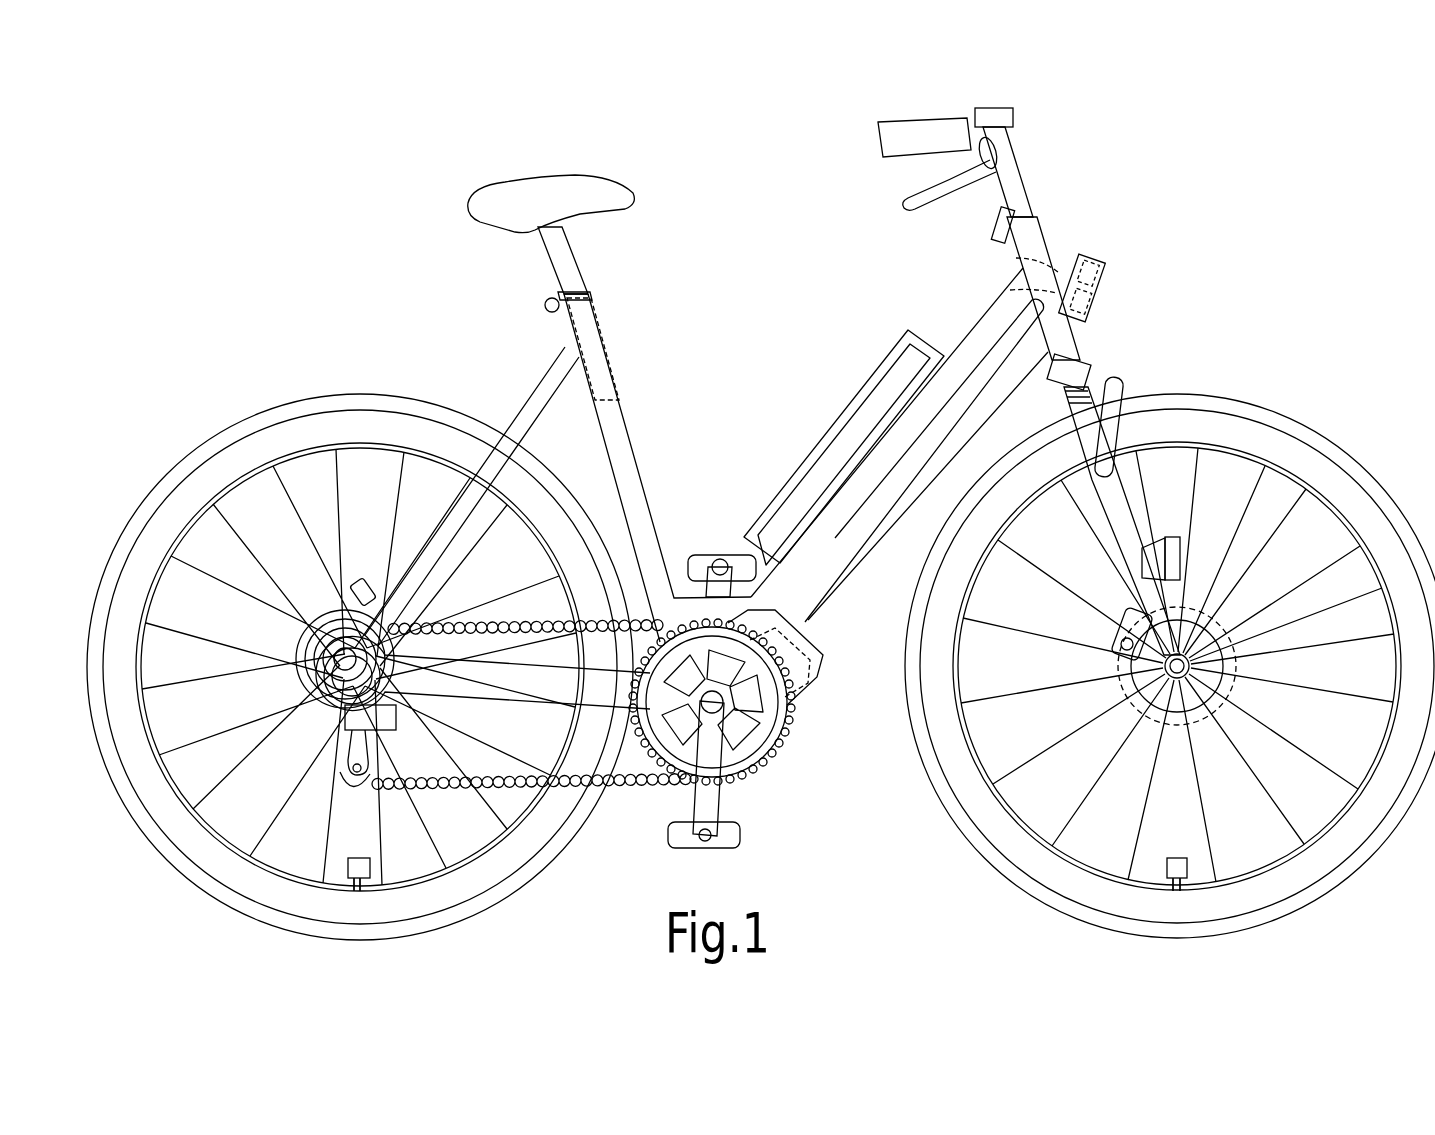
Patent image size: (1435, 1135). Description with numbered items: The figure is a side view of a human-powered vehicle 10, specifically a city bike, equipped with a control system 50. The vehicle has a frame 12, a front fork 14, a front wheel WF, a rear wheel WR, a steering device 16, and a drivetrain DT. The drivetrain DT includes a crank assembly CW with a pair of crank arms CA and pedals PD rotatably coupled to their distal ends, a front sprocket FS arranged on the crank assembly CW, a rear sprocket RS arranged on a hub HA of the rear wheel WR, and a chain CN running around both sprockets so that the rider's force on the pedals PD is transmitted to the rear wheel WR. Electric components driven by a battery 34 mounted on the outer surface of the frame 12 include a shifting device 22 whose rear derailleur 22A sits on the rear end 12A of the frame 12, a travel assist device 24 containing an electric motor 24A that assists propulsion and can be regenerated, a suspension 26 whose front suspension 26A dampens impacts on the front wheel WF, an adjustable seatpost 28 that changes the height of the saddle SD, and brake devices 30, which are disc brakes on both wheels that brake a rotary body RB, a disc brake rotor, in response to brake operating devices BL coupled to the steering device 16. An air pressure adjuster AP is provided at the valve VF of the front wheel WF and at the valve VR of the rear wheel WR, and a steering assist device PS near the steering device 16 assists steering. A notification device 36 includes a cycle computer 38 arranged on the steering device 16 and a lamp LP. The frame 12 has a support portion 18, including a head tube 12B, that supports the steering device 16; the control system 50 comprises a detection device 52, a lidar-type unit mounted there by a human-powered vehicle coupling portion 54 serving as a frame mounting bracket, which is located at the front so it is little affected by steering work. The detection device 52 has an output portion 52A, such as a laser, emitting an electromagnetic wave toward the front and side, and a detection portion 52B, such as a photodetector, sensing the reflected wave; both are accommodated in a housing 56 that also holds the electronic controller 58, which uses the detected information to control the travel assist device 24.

The human-powered vehicle 10 is at (1219, 111).
The frame 12 is at (623, 412).
The rear end of frame 12A is at (333, 610).
The head tube 12B is at (1050, 363).
The front fork 14 is at (1118, 516).
The steering device 16 is at (910, 120).
The support portion 18 is at (1040, 234).
The shifting device 22 is at (449, 743).
The rear derailleur 22A is at (405, 717).
The travel assist device 24 is at (824, 636).
The electric motor 24A is at (810, 680).
The suspension 26 is at (1182, 418).
The front suspension 26A is at (1125, 392).
The adjustable seatpost 28 is at (596, 312).
The brake devices 30 is at (365, 565).
The battery 34 is at (862, 384).
The notification device 36 is at (1012, 89).
The cycle computer 38 is at (992, 108).
The control system 50 is at (1127, 204).
The detection device 52 is at (1124, 290).
The output portion 52A is at (1098, 262).
The detection portion 52B is at (1104, 294).
The human-powered vehicle coupling portion 54 is at (1016, 258).
The housing 56 is at (1100, 344).
The electronic controller 58 is at (1010, 290).
The saddle SD is at (572, 178).
The rear wheel WR is at (246, 416).
The front wheel WF is at (1294, 418).
The rear sprocket RS is at (298, 645).
The hub HA is at (330, 712).
The air pressure adjuster AP is at (360, 858).
The valve of rear wheel VR is at (368, 888).
The valve of front wheel VF is at (1183, 888).
The pedals PD is at (702, 555).
The crank arms CA is at (736, 588).
The front sprocket FS is at (658, 760).
The chain CN is at (618, 790).
The crank assembly CW is at (817, 802).
The drivetrain DT is at (807, 874).
The brake operating devices BL is at (903, 198).
The steering assist device PS is at (995, 228).
The lamp LP is at (1185, 546).
The rotary body RB is at (1236, 668).